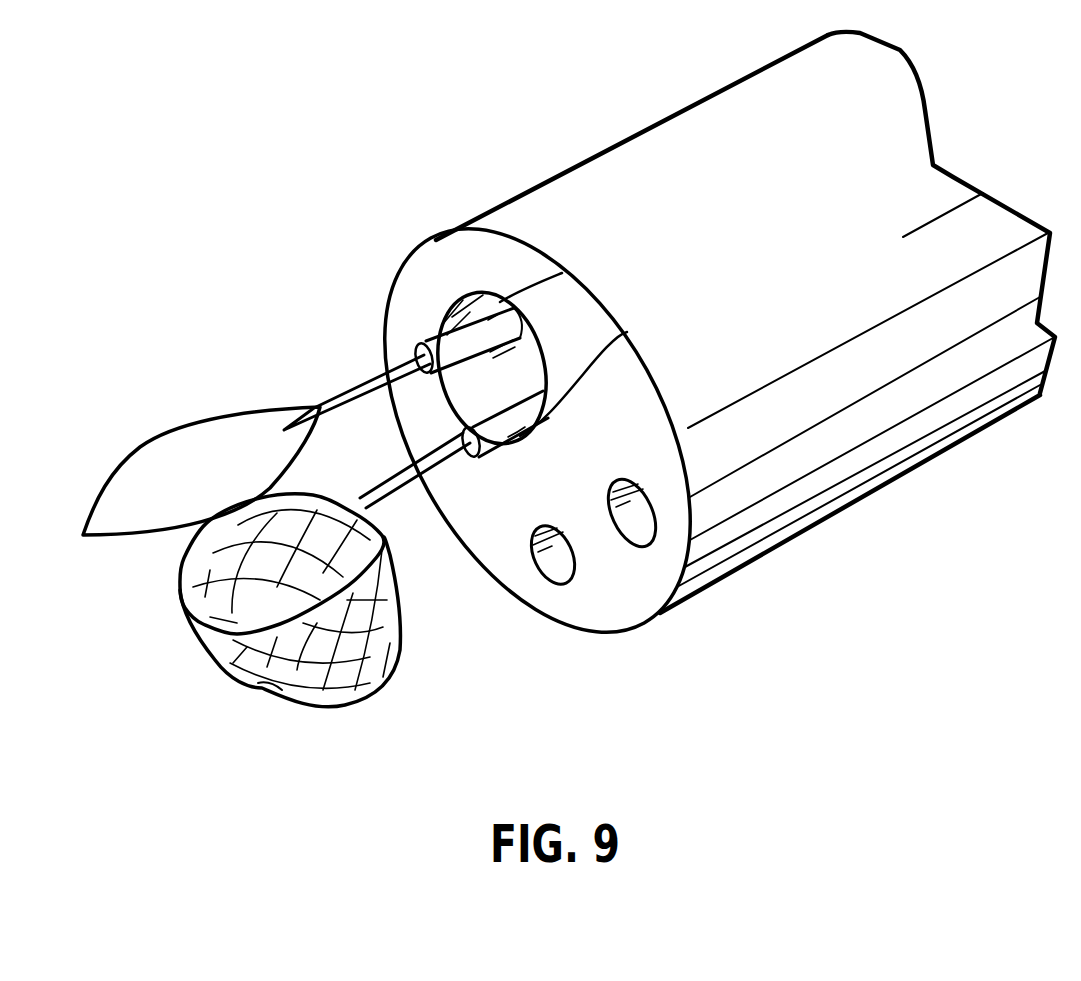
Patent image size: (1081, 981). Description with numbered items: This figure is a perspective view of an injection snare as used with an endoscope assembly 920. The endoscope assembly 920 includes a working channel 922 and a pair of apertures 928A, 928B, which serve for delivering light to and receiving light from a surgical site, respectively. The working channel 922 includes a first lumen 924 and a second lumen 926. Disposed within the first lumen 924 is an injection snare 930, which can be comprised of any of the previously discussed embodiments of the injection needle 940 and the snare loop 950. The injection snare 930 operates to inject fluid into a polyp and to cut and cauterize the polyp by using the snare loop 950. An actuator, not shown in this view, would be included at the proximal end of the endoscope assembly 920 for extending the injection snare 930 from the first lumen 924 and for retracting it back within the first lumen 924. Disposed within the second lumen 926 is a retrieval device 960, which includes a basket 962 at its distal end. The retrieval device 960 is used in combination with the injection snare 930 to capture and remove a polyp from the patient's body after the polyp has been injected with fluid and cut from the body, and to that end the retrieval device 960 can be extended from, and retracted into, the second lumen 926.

The endoscope assembly 920 is at (663, 152).
The working channel 922 is at (453, 297).
The first lumen 924 is at (562, 273).
The second lumen 926 is at (627, 332).
The aperture 928A is at (530, 540).
The aperture 928B is at (617, 483).
The injection snare 930 is at (195, 402).
The injection needle 940 is at (335, 402).
The snare loop 950 is at (127, 462).
The retrieval device 960 is at (412, 467).
The basket 962 is at (183, 592).